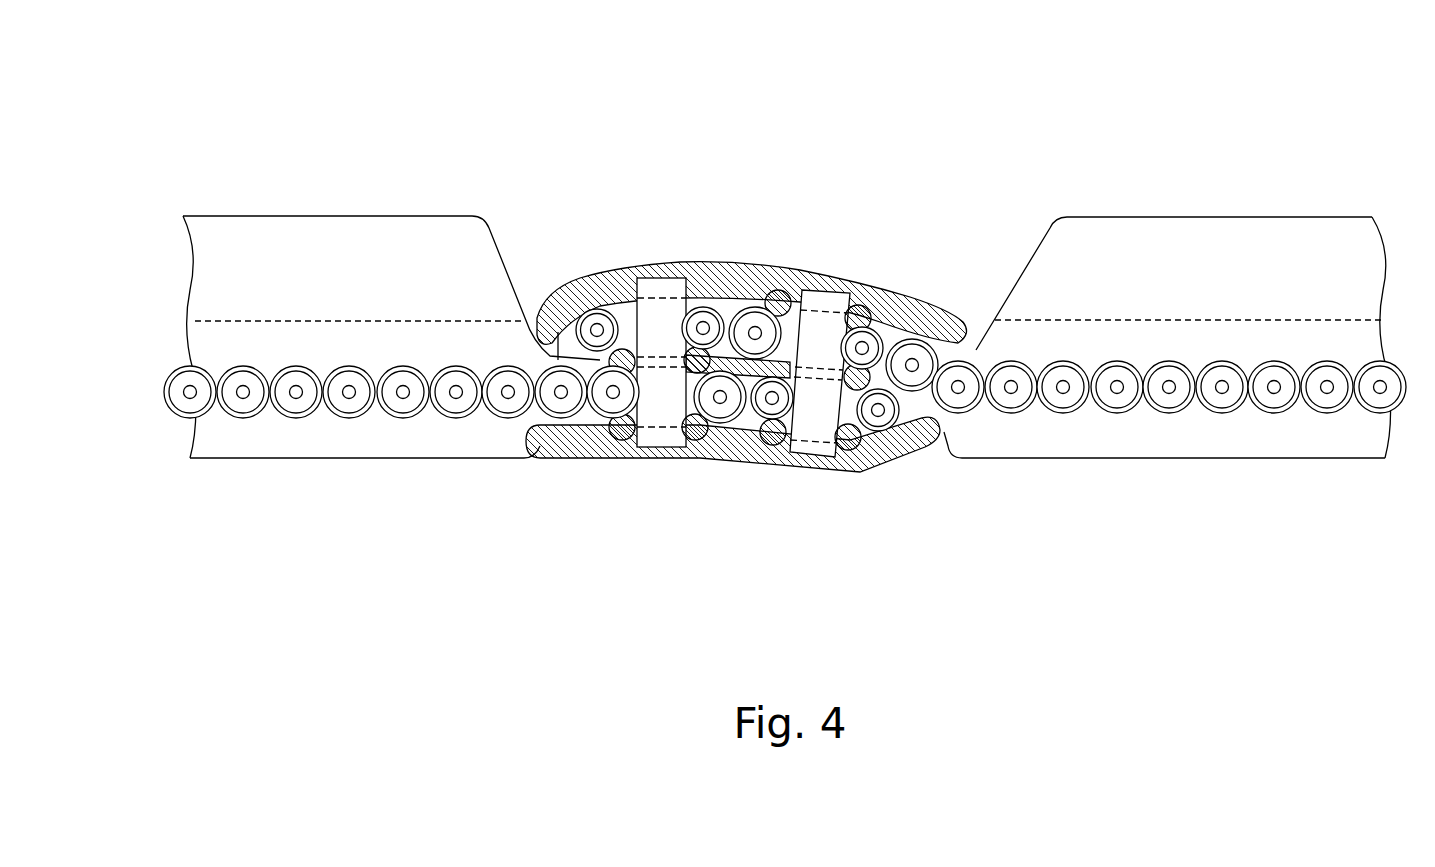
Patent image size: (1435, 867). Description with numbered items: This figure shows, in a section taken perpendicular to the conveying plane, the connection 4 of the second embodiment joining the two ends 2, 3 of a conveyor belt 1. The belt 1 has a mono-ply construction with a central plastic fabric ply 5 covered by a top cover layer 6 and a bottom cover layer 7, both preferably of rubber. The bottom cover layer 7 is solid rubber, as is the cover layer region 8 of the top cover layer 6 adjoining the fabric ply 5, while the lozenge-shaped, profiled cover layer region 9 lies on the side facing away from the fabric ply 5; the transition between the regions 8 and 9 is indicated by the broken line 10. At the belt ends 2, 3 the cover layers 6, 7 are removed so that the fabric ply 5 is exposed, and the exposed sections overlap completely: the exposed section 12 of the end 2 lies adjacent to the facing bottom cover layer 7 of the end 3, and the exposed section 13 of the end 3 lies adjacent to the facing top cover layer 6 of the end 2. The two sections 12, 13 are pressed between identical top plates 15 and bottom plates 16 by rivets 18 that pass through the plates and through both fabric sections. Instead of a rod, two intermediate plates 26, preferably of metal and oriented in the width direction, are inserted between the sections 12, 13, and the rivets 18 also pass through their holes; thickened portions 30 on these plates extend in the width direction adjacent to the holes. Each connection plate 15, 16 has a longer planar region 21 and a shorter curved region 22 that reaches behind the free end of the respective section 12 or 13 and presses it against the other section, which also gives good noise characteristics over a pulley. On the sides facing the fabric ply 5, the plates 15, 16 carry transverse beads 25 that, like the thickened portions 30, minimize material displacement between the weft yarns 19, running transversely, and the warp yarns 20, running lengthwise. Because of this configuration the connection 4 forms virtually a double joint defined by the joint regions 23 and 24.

The conveyor belt 1 is at (383, 95).
The end of the conveyor belt 2 is at (482, 195).
The end of the conveyor belt 3 is at (1040, 215).
The connection 4 is at (872, 268).
The fabric ply 5 is at (428, 418).
The top cover layer 6 is at (172, 318).
The bottom cover layer 7 is at (297, 448).
The cover layer region 8 is at (203, 346).
The cover layer region 9 is at (203, 285).
The broken line 10 is at (265, 320).
The exposed section 12 is at (866, 448).
The exposed section 13 is at (905, 315).
The top plate 15 is at (714, 266).
The bottom plate 16 is at (607, 460).
The rivet 18 is at (828, 300).
The weft yarn 19 is at (1063, 398).
The warp yarn 20 is at (1023, 356).
The planar region 21 is at (768, 284).
The curved region 22 is at (575, 290).
The joint region 23 is at (537, 290).
The joint region 24 is at (975, 296).
The bead 25 is at (788, 305).
The intermediate plate 26 is at (718, 348).
The thickened portion 30 is at (612, 300).